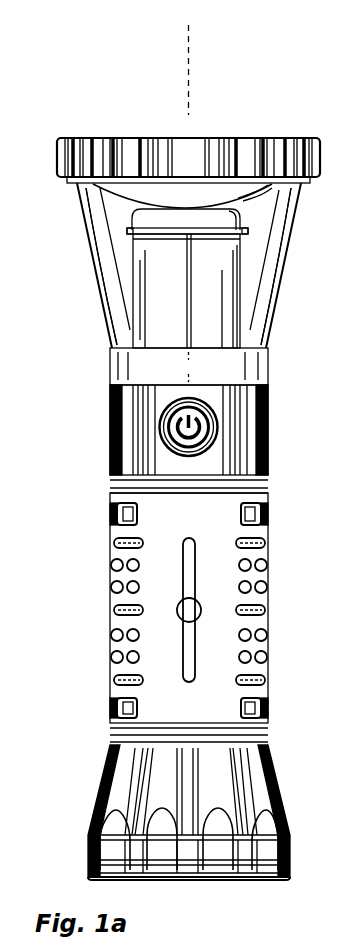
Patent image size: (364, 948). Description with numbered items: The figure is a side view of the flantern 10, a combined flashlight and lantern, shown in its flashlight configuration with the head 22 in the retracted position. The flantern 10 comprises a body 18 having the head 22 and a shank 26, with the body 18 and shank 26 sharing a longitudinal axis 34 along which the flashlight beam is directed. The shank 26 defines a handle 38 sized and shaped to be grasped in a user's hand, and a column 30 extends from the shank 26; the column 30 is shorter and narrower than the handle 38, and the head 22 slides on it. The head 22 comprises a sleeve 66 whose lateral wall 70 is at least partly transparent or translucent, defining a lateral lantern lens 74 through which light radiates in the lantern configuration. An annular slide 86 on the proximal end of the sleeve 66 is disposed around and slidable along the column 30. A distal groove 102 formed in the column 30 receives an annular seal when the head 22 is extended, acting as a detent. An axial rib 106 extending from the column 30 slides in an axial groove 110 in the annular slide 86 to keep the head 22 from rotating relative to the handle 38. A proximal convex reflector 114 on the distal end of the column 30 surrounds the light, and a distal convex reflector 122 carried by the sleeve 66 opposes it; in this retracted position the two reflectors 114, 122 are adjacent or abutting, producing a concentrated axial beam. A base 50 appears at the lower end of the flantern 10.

The flantern 10 is at (83, 766).
The body 18 is at (118, 555).
The head 22 is at (57, 153).
The shank 26 is at (120, 670).
The column 30 is at (147, 288).
The longitudinal axis 34 is at (188, 52).
The handle 38 is at (253, 598).
The base 50 is at (283, 802).
The sleeve 66 is at (78, 226).
The lateral wall 70 is at (277, 222).
The lateral lantern lens 74 is at (280, 310).
The annular slide 86 is at (260, 362).
The distal groove 102 is at (267, 203).
The axial rib 106 is at (182, 320).
The axial groove 110 is at (187, 370).
The proximal convex reflector 114 is at (110, 200).
The distal convex reflector 122 is at (140, 196).